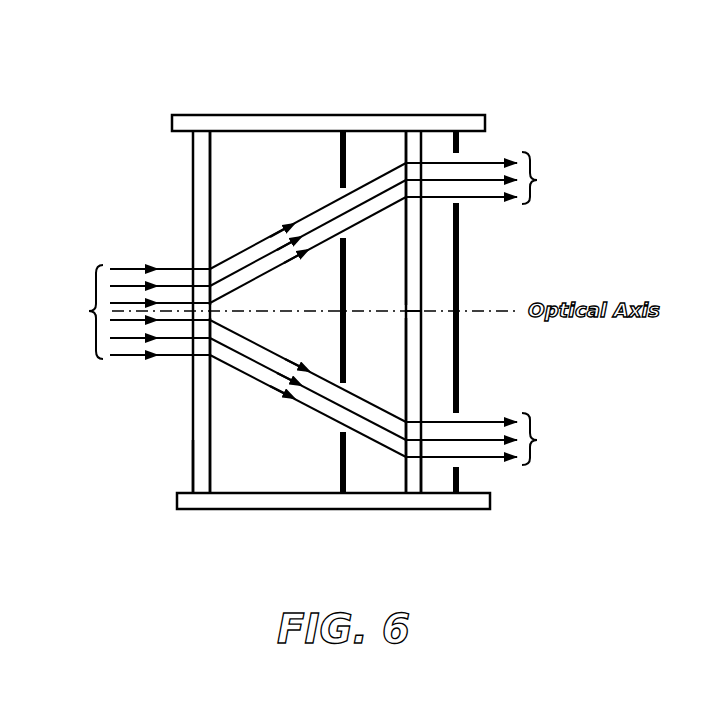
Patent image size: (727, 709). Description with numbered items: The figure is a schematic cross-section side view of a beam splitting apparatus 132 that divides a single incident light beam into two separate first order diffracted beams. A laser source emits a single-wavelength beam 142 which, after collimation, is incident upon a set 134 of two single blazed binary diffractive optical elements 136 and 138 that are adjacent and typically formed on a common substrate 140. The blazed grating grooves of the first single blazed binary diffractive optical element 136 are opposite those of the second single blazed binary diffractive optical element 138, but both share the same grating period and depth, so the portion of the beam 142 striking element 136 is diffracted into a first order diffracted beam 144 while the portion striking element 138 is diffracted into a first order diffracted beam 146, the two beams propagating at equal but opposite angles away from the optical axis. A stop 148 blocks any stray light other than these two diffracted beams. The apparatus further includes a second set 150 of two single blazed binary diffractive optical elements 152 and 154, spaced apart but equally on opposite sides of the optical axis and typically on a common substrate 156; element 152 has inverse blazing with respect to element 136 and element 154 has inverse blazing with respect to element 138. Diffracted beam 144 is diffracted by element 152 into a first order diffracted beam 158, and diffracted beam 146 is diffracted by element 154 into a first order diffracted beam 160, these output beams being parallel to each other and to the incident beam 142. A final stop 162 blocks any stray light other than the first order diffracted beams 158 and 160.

The beam splitting apparatus 132 is at (238, 62).
The set of two single blazed binary diffractive optical elements 134 is at (182, 146).
The first single blazed binary diffractive optical element 136 is at (219, 194).
The second single blazed binary diffractive optical element 138 is at (221, 449).
The common substrate 140 is at (210, 480).
The beam 142 is at (126, 312).
The first order diffracted beam 144 is at (320, 206).
The first order diffracted beam 146 is at (322, 416).
The stop 148 is at (342, 480).
The second set of two single blazed binary diffractive optical elements 150 is at (433, 142).
The single blazed binary diffractive optical element 152 is at (401, 232).
The single blazed binary diffractive optical element 154 is at (401, 342).
The common substrate 156 is at (413, 478).
The first order diffracted beam 158 is at (497, 178).
The first order diffracted beam 160 is at (498, 439).
The stop 162 is at (462, 475).